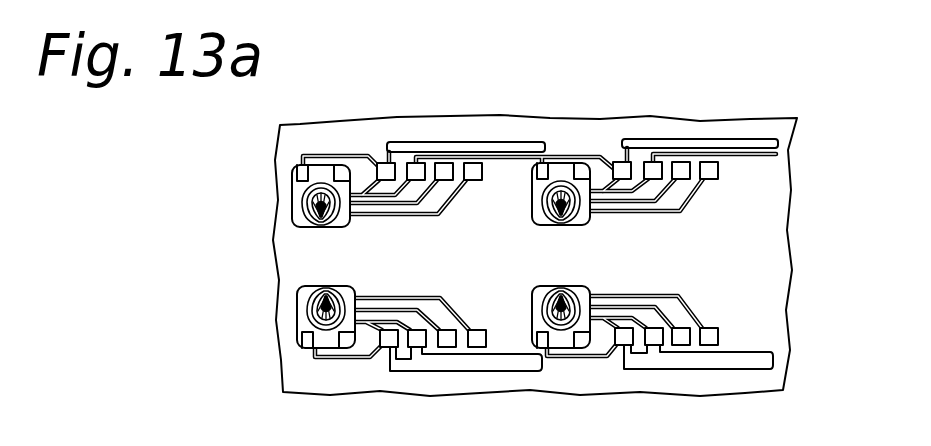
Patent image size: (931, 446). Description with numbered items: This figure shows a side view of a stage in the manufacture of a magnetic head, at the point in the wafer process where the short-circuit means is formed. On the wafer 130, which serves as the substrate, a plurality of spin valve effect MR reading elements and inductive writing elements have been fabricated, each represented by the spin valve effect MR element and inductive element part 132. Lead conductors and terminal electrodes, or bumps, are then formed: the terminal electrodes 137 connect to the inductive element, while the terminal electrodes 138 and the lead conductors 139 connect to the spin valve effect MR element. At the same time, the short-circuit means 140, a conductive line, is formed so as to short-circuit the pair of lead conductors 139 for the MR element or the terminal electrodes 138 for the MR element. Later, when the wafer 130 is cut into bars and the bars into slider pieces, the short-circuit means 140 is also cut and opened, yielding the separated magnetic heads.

The wafer 130 is at (701, 127).
The spin valve effect MR element and inductive element part 132 is at (559, 223).
The terminal electrodes for the inductive element 137 is at (682, 180).
The terminal electrodes for the spin valve effect MR element 138 is at (677, 180).
The lead conductors for the spin valve effect MR element 139 is at (601, 189).
The short-circuit means 140 is at (768, 140).